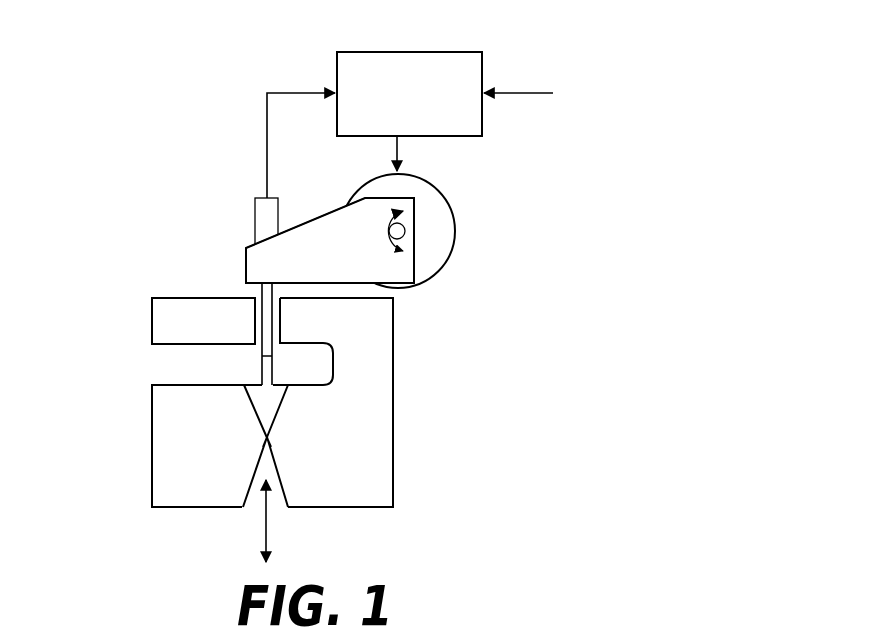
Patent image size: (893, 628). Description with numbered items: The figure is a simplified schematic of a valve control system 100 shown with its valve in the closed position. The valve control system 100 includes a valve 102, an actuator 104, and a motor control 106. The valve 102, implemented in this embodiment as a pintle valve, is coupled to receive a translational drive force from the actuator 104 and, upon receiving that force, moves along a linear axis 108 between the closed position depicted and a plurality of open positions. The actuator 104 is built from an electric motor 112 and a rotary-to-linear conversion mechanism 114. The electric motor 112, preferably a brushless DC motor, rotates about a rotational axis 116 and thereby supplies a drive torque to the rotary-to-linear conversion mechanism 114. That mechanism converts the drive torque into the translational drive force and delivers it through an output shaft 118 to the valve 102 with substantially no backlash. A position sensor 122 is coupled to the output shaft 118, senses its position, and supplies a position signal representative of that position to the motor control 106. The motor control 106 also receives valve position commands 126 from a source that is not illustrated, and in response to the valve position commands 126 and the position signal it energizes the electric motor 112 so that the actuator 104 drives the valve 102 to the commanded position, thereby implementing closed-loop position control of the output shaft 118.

The valve control system 100 is at (106, 173).
The valve 102 is at (267, 398).
The actuator 104 is at (343, 220).
The motor control 106 is at (433, 52).
The linear axis 108 is at (267, 530).
The electric motor 112 is at (453, 205).
The rotary-to-linear conversion mechanism 114 is at (312, 215).
The rotational axis 116 is at (406, 231).
The output shaft 118 is at (262, 296).
The position sensor 122 is at (255, 207).
The valve position commands 126 is at (522, 93).